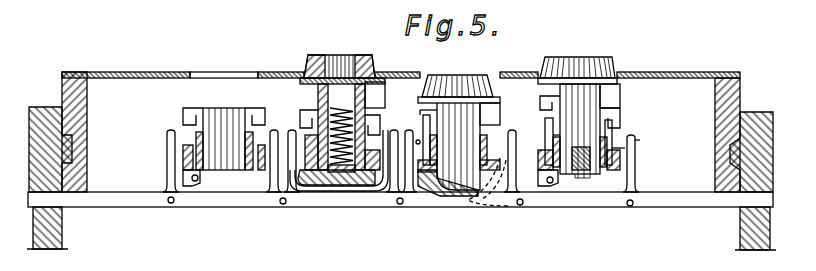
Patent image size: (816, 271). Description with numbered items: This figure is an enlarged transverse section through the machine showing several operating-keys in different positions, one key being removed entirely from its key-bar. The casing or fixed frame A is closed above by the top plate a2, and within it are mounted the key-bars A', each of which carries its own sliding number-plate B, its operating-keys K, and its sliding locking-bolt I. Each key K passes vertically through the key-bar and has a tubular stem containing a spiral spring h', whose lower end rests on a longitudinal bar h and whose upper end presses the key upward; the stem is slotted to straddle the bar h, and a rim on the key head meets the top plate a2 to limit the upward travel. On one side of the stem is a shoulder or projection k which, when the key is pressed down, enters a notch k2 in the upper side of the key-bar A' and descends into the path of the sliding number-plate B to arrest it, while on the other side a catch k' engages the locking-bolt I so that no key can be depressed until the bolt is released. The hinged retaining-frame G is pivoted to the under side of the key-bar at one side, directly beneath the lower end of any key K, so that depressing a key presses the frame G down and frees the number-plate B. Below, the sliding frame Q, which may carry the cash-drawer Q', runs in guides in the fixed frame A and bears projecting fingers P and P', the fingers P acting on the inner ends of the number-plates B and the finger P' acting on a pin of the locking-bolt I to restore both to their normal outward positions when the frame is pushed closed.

The fixed frame A is at (401, 132).
The top plate a2 is at (401, 66).
The key-bar A' is at (401, 137).
The operating-key K is at (458, 71).
The shoulder or projection k is at (437, 103).
The catch k' is at (426, 111).
The notch k2 is at (626, 122).
The spiral spring h' is at (341, 129).
The longitudinal bar h is at (456, 186).
The retaining-frame G is at (350, 178).
The locking-bolt I is at (423, 123).
The sliding number-plate B is at (612, 150).
The finger P is at (455, 155).
The finger P' is at (283, 154).
The sliding frame Q is at (401, 228).
The cash-drawer Q' is at (400, 212).